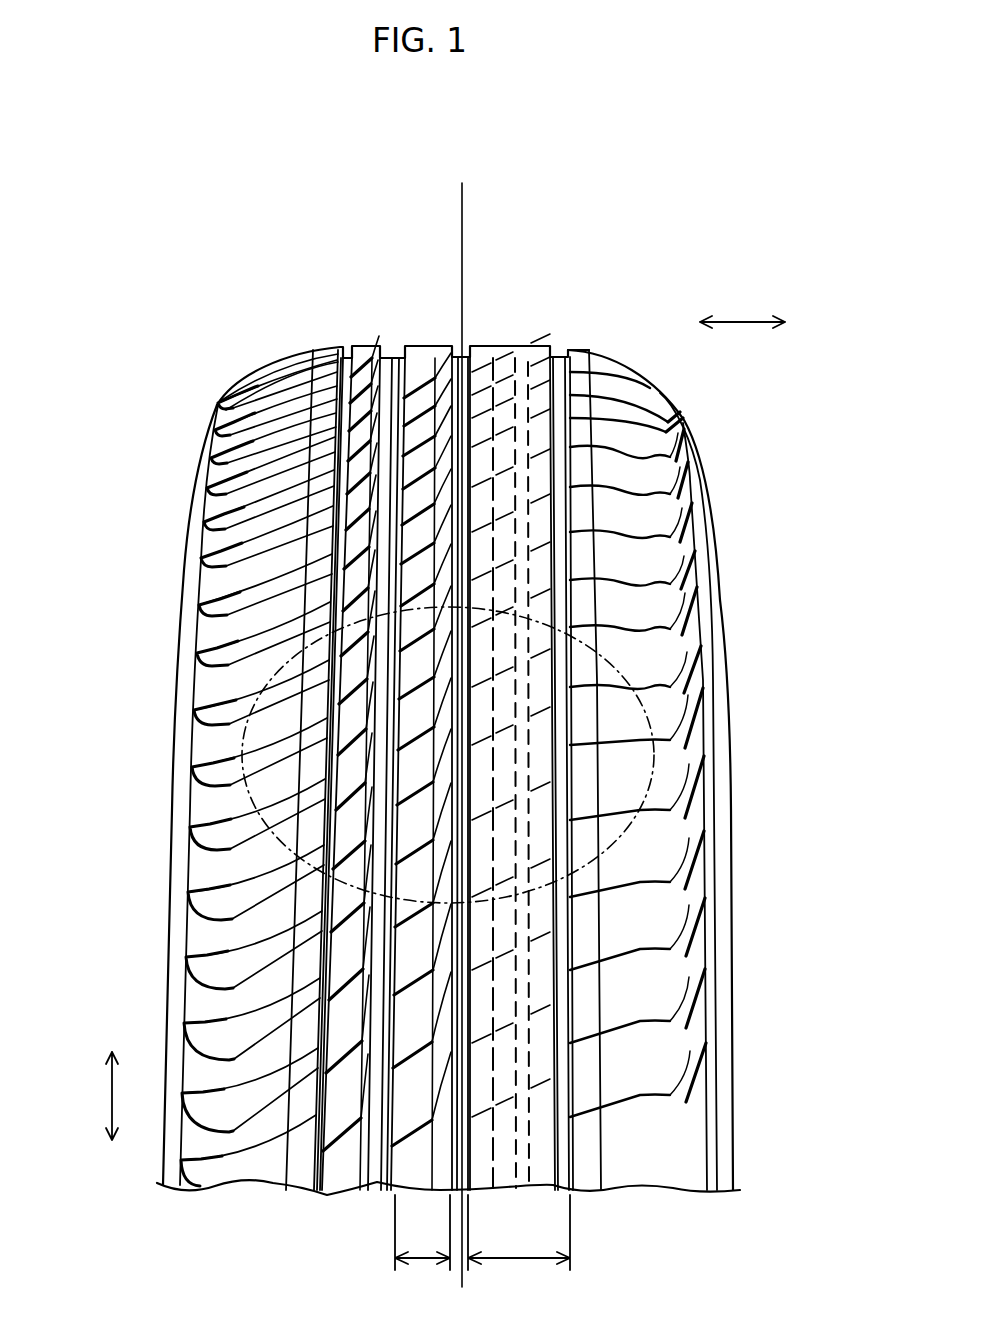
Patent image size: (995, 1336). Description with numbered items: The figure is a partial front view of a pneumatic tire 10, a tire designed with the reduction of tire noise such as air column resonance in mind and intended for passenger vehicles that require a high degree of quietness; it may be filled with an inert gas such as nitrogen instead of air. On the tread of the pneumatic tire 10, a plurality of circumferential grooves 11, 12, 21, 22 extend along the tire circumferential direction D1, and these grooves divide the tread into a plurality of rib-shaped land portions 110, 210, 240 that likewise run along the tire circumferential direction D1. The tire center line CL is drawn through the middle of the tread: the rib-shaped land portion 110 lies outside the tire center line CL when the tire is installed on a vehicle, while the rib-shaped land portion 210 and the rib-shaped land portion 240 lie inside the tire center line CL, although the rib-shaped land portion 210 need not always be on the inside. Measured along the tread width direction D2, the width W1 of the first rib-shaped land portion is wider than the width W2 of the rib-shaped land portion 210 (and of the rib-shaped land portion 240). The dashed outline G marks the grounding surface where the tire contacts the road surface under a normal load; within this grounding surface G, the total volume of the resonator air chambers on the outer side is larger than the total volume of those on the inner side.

The pneumatic tire 10 is at (651, 191).
The circumferential groove 11 is at (553, 350).
The circumferential groove 12 is at (464, 345).
The circumferential groove 21 is at (396, 345).
The circumferential groove 22 is at (345, 347).
The rib-shaped land portion 110 is at (512, 345).
The rib-shaped land portion 210 is at (430, 345).
The rib-shaped land portion 240 is at (350, 345).
The tire center line CL is at (465, 191).
The grounding surface G is at (643, 708).
The tire circumferential direction D1 is at (112, 1100).
The tread width direction D2 is at (742, 322).
The width of the first rib-shaped land portion W1 is at (519, 1232).
The width of the rib-shaped land portion W2 is at (422, 1232).